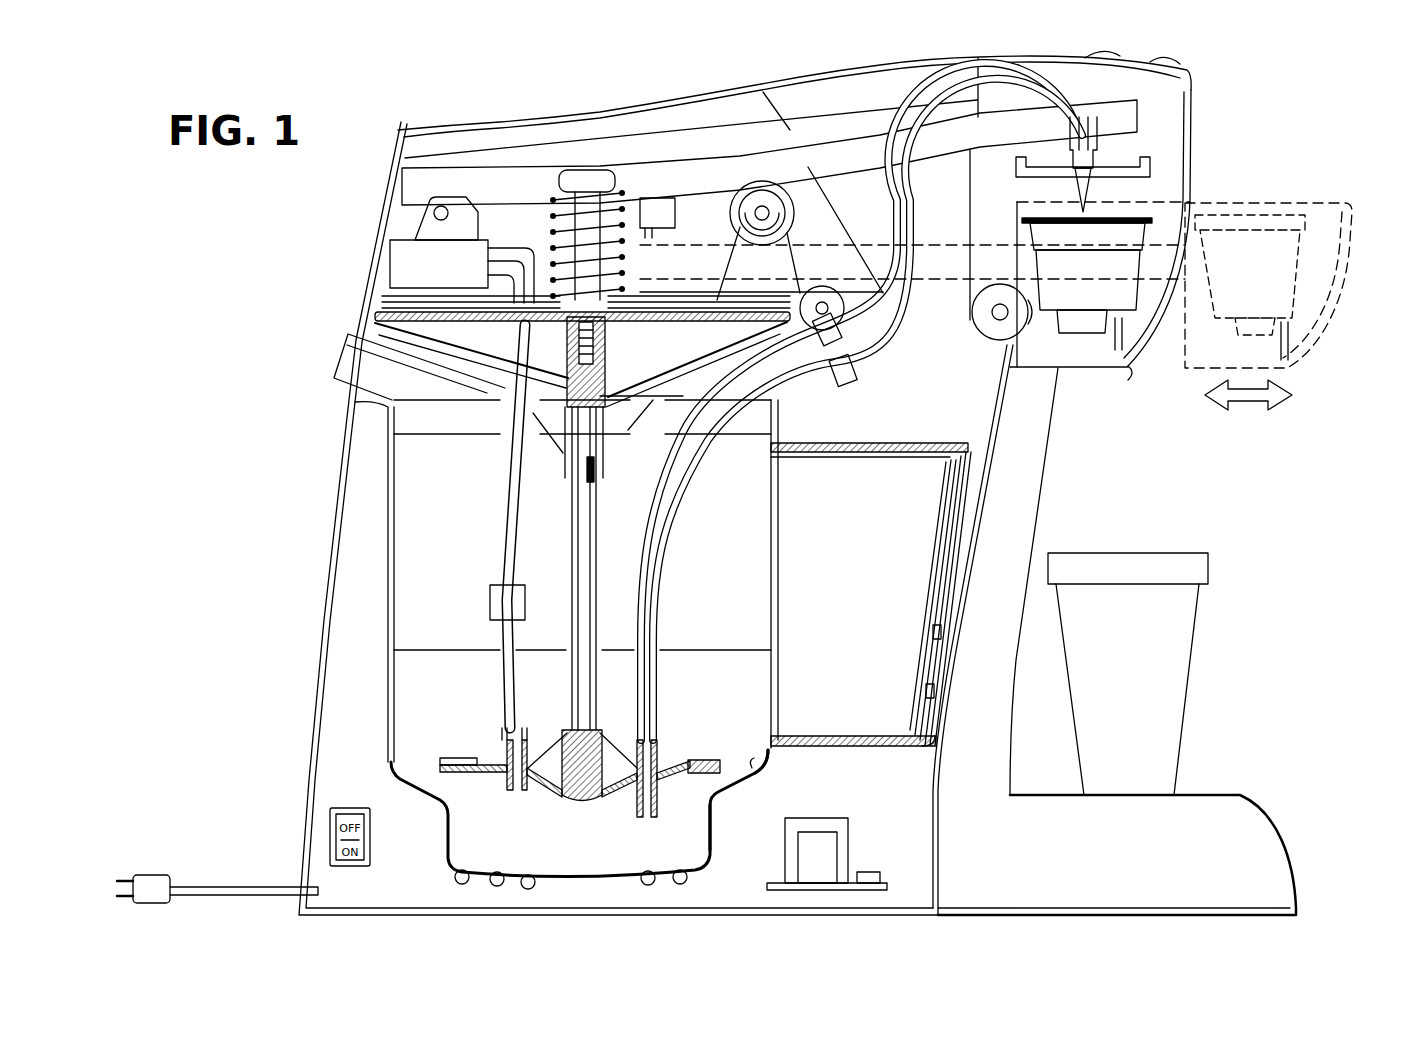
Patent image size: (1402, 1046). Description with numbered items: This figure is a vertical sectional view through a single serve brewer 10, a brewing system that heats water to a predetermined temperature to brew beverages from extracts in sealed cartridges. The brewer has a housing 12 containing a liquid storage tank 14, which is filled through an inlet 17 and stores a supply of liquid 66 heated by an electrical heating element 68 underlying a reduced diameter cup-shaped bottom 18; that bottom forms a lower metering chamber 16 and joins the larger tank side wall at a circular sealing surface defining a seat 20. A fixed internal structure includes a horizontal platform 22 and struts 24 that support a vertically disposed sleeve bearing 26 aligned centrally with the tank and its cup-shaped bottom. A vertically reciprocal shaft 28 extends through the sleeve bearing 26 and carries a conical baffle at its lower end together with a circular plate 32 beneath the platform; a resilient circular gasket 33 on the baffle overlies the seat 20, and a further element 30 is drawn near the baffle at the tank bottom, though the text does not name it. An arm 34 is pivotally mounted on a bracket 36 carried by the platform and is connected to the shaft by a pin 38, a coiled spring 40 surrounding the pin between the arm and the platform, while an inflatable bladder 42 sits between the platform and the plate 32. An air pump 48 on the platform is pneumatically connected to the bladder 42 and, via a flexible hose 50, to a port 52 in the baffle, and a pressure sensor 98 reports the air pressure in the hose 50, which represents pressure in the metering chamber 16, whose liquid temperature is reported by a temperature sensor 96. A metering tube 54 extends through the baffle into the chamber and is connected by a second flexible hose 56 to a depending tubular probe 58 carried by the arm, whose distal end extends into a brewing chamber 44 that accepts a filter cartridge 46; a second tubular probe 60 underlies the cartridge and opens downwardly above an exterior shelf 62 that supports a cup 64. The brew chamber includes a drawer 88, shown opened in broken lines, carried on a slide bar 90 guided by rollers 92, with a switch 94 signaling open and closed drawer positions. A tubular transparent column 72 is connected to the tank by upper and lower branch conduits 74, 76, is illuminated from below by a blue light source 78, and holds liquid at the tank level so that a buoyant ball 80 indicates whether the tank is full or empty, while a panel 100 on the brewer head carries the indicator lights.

The single serve brewer 10 is at (1218, 88).
The housing 12 is at (330, 553).
The liquid storage tank 14 is at (388, 603).
The lower metering chamber 16 is at (588, 852).
The inlet 17 is at (335, 360).
The cup-shaped bottom 18 is at (712, 842).
The seat 20 is at (755, 778).
The horizontal platform 22 is at (378, 318).
The struts 24 is at (456, 438).
The sleeve bearing 26 is at (600, 470).
The shaft 28 is at (582, 521).
The inlet 30 is at (680, 760).
The circular plate 32 is at (500, 322).
The circular gasket 33 is at (457, 775).
The arm 34 is at (660, 157).
The bracket 36 is at (418, 229).
The pin 38 is at (558, 196).
The coiled spring 40 is at (555, 222).
The inflatable bladder 42 is at (670, 323).
The brewing chamber 44 is at (1170, 163).
The filter cartridge 46 is at (1104, 294).
The air pump 48 is at (392, 262).
The flexible hose 50 is at (502, 486).
The port 52 is at (504, 750).
The metering tube 54 is at (658, 790).
The second flexible hose 56 is at (660, 550).
The tubular probe 58 is at (1113, 155).
The second tubular probe 60 is at (1108, 338).
The exterior shelf 62 is at (1222, 794).
The cup 64 is at (1185, 640).
The liquid 66 is at (694, 650).
The electrical heating element 68 is at (521, 889).
The tubular transparent column 72 is at (952, 548).
The upper branch conduit 74 is at (880, 444).
The lower branch conduit 76 is at (855, 748).
The blue light source 78 is at (922, 756).
The ball 80 is at (940, 646).
The drawer 88 is at (1124, 352).
The slide bar 90 is at (676, 243).
The rollers 92 is at (797, 202).
The switch 94 is at (676, 208).
The temperature sensor 96 is at (590, 878).
The pressure sensor 98 is at (490, 598).
The panel 100 is at (1000, 58).